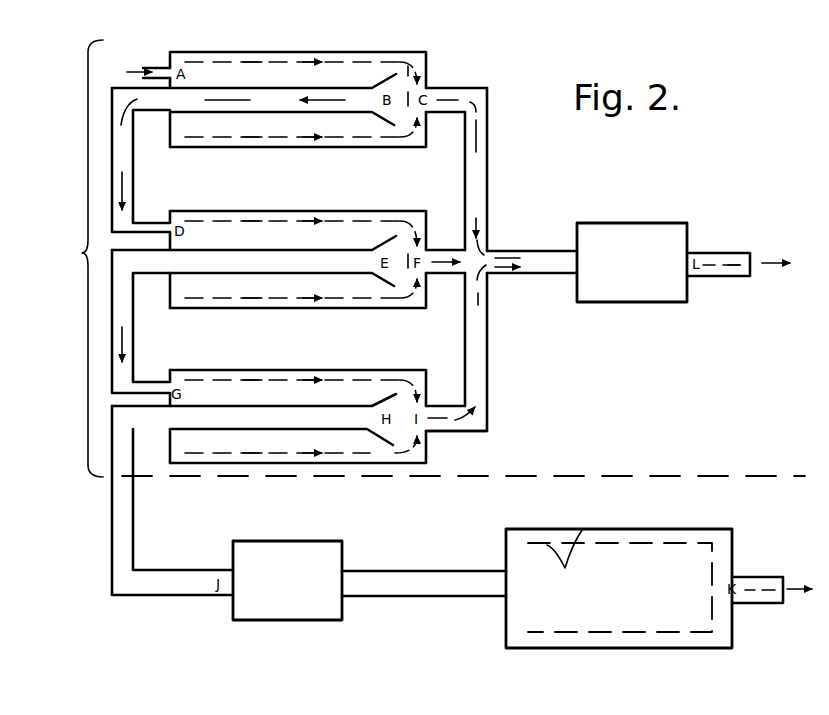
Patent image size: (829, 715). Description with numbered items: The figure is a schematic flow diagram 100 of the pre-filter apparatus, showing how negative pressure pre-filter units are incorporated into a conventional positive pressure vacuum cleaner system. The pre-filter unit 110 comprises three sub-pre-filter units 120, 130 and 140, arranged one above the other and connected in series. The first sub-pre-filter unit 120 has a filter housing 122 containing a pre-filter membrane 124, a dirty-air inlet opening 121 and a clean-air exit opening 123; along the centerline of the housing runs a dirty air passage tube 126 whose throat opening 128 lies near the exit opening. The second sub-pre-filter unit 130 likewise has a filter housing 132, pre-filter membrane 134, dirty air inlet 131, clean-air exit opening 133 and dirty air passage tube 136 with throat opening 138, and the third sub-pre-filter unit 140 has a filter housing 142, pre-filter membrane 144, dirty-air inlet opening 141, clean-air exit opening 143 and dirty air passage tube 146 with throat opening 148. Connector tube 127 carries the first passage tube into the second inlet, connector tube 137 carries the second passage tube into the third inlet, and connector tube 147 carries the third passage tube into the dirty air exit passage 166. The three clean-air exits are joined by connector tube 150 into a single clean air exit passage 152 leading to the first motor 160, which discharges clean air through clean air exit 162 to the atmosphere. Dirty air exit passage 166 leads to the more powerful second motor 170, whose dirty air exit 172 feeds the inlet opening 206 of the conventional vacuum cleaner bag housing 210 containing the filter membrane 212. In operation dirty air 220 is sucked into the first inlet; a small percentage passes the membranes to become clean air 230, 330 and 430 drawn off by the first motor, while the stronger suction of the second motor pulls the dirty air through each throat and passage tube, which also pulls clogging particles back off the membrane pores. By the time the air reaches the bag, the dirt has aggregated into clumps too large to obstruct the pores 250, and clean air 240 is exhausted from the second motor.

The schematic flow diagram of the pre-filter apparatus 100 is at (522, 323).
The pre-filter unit 110 is at (75, 258).
The first sub-pre-filter unit 120 is at (395, 51).
The dirty-air inlet opening 121 is at (196, 68).
The filter housing 122 is at (307, 51).
The clean-air exit opening 123 is at (428, 88).
The pre-filter membrane 124 is at (240, 60).
The dirty air passage tube 126 is at (192, 103).
The connector tube 127 is at (112, 118).
The throat opening 128 is at (393, 116).
The second sub-pre-filter unit 130 is at (283, 211).
The dirty air inlet 131 is at (168, 228).
The filter housing 132 is at (220, 210).
The clean-air exit opening 133 is at (425, 268).
The pre-filter membrane 134 is at (350, 218).
The dirty air passage tube 136 is at (210, 273).
The connector tube 137 is at (112, 310).
The throat opening 138 is at (385, 274).
The third sub-pre-filter unit 140 is at (368, 369).
The dirty-air inlet opening 141 is at (168, 388).
The filter housing 142 is at (278, 368).
The clean-air exit opening 143 is at (453, 424).
The pre-filter membrane 144 is at (223, 378).
The dirty air passage tube 146 is at (210, 420).
The connector tube 147 is at (110, 498).
The throat opening 148 is at (392, 438).
The connector tube 150 is at (480, 190).
The clean air exit passage 152 is at (533, 250).
The first motor 160 is at (675, 237).
The clean air exit 162 is at (718, 253).
The dirty air exit passage 166 is at (167, 597).
The second motor 170 is at (263, 612).
The dirty air exit 172 is at (390, 598).
The inlet opening 206 is at (505, 588).
The vacuum cleaner bag housing 210 is at (662, 529).
The vacuum cleaner filter membrane 212 is at (582, 530).
The dirty air 220 is at (130, 70).
The clean air 230 is at (468, 103).
The clean air 240 is at (752, 580).
The pores 250 is at (675, 632).
The clean air 330 is at (438, 257).
The clean air 430 is at (438, 413).